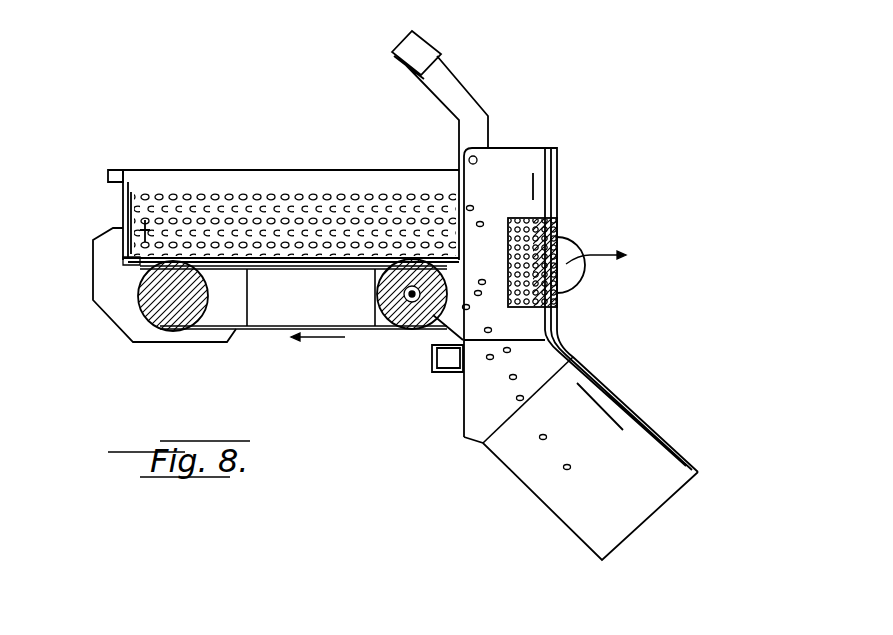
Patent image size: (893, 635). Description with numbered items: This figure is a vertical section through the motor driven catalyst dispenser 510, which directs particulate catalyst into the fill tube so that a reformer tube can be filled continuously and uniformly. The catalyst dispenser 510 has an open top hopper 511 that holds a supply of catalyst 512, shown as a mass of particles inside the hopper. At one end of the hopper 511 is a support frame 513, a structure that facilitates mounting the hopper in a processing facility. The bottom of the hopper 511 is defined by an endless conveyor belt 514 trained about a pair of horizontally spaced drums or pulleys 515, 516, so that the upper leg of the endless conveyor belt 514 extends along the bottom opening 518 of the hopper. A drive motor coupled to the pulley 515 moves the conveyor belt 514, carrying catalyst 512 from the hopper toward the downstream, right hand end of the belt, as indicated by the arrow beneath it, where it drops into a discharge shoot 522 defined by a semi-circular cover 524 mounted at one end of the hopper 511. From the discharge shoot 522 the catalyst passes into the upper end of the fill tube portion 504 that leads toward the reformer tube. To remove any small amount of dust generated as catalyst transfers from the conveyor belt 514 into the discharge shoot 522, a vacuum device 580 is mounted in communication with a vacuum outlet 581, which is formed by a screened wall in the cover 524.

The fill tube portion 504 is at (563, 497).
The catalyst dispenser 510 is at (352, 148).
The hopper 511 is at (176, 182).
The catalyst 512 is at (266, 193).
The support frame 513 is at (470, 109).
The endless conveyor belt 514 is at (338, 328).
The drum or pulley 515 is at (173, 320).
The drum or pulley 516 is at (391, 327).
The bottom opening 518 is at (134, 268).
The discharge shoot 522 is at (510, 333).
The semi-circular cover 524 is at (557, 183).
The vacuum device 580 is at (577, 240).
The vacuum outlet 581 is at (537, 218).